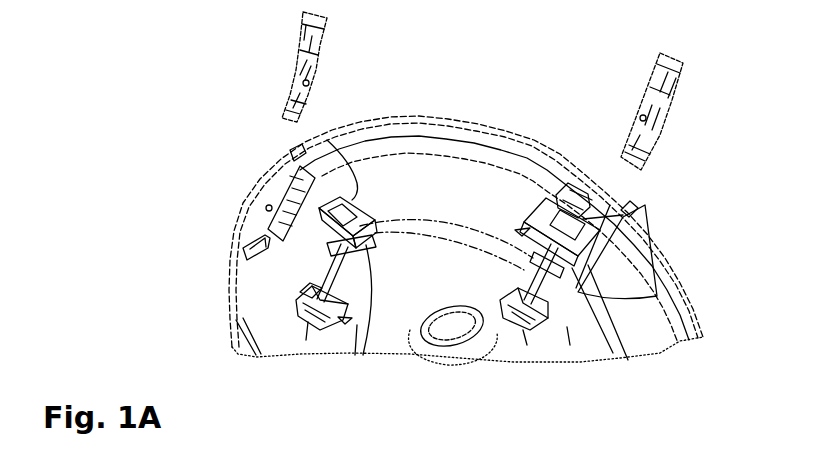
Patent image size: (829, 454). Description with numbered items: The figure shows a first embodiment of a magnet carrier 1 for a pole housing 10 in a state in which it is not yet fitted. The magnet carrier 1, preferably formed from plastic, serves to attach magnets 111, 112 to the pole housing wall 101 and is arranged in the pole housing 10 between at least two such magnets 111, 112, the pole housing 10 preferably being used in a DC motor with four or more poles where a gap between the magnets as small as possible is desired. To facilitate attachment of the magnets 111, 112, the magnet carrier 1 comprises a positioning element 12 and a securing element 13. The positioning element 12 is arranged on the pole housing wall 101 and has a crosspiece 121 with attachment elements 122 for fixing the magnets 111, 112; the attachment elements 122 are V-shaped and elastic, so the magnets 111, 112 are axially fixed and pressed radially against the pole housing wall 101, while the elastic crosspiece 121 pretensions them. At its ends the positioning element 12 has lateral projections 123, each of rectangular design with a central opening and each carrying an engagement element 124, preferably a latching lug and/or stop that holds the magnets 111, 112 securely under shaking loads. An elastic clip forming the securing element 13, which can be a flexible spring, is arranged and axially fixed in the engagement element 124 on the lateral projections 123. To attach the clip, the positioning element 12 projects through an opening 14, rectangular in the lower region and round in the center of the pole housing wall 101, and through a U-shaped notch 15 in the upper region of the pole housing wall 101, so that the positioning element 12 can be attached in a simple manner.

The magnet carrier 1 is at (211, 150).
The pole housing 10 is at (230, 346).
The pole housing wall 101 is at (250, 223).
The magnet 111 is at (463, 150).
The magnet 112 is at (677, 315).
The positioning element 12 is at (308, 322).
The crosspiece 121 is at (318, 272).
The attachment element 122 is at (536, 228).
The lateral projection 123 is at (350, 162).
The engagement element 124 is at (325, 200).
The securing element 13 is at (303, 53).
The opening 14 is at (266, 208).
The notch 15 is at (620, 206).